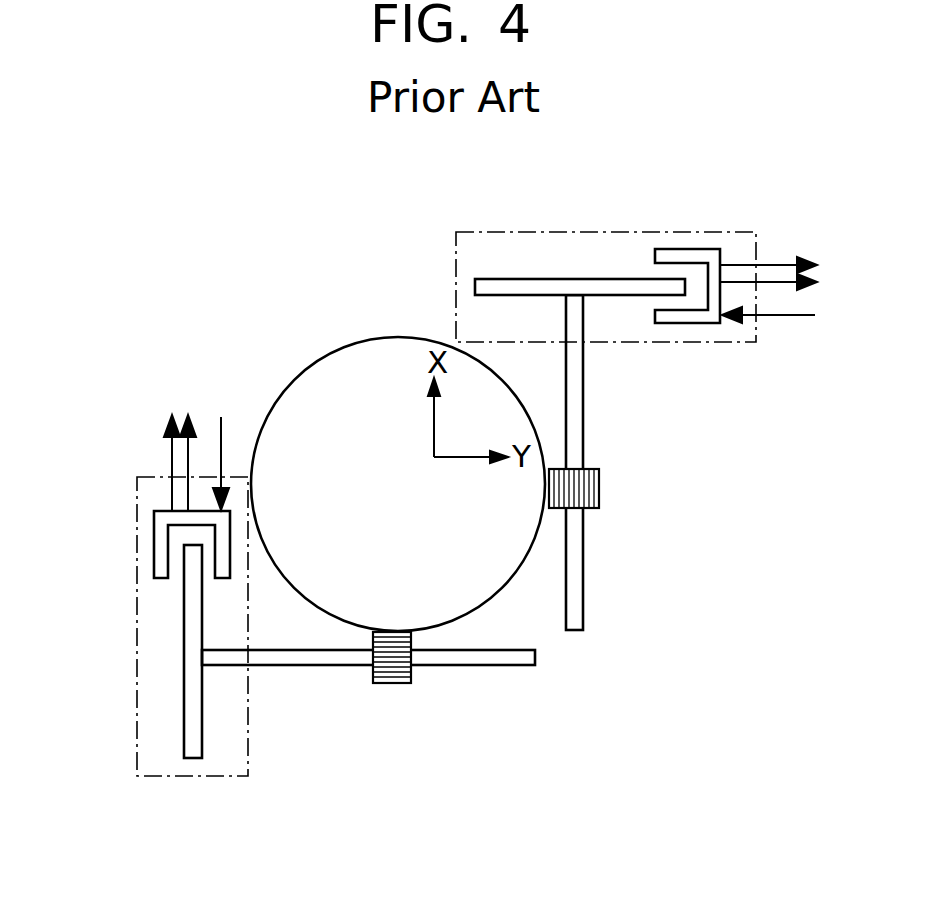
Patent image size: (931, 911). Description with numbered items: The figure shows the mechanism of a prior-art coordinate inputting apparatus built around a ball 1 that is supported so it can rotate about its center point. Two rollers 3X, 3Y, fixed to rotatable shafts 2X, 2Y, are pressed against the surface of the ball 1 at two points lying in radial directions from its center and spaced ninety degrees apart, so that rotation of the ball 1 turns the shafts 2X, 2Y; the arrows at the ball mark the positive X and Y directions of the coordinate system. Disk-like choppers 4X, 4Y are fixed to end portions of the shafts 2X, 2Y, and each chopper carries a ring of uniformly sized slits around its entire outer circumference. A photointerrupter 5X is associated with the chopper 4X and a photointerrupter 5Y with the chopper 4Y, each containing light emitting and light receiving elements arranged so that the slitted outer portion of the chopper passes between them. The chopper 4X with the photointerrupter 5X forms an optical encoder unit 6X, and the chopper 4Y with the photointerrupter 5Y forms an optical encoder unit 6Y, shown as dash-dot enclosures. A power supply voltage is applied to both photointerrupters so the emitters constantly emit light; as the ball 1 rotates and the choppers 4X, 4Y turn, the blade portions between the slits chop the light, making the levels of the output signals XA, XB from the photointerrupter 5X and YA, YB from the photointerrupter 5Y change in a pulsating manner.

The ball 1 is at (332, 352).
The rotatable shaft 2X is at (493, 665).
The roller 3X is at (387, 685).
The disk-like chopper 4X is at (202, 712).
The photointerrupter 5X is at (154, 540).
The optical encoder unit 6X is at (137, 683).
The rotatable shaft 2Y is at (583, 425).
The roller 3Y is at (599, 490).
The disk-like chopper 4Y is at (497, 279).
The photointerrupter 5Y is at (690, 249).
The optical encoder unit 6Y is at (610, 232).
The output signal XA is at (168, 455).
The output signal XB is at (192, 456).
The output signal YA is at (775, 283).
The output signal YB is at (775, 284).